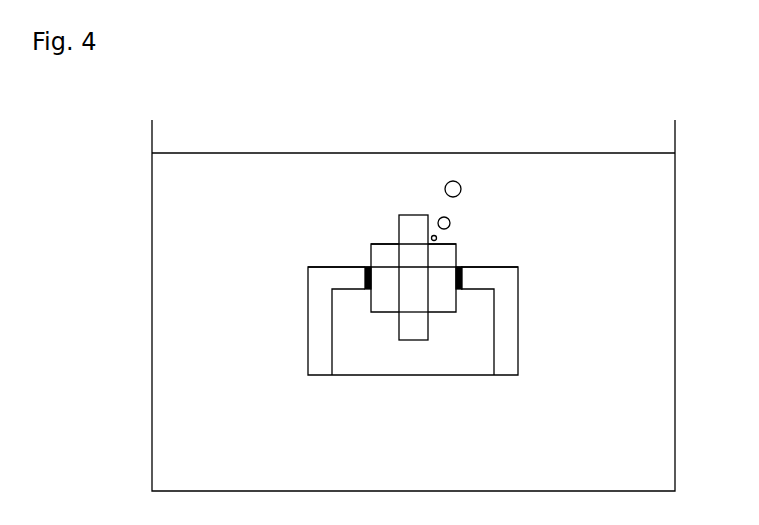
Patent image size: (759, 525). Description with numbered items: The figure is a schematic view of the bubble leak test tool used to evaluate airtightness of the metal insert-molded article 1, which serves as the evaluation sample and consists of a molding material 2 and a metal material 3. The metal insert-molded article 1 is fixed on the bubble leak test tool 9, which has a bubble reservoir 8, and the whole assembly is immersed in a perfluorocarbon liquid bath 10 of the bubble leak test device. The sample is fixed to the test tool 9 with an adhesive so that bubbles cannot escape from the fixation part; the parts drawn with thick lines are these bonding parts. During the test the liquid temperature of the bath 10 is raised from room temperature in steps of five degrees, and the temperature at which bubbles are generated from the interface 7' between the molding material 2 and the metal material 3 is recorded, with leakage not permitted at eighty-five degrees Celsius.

The metal insert-molded article 1 is at (373, 227).
The molding material 2 is at (458, 246).
The metal material 3 is at (415, 215).
The interface 7' is at (396, 337).
The bubble reservoir 8 is at (455, 365).
The bubble leak test tool 9 is at (518, 326).
The perfluorocarbon liquid bath 10 is at (675, 368).